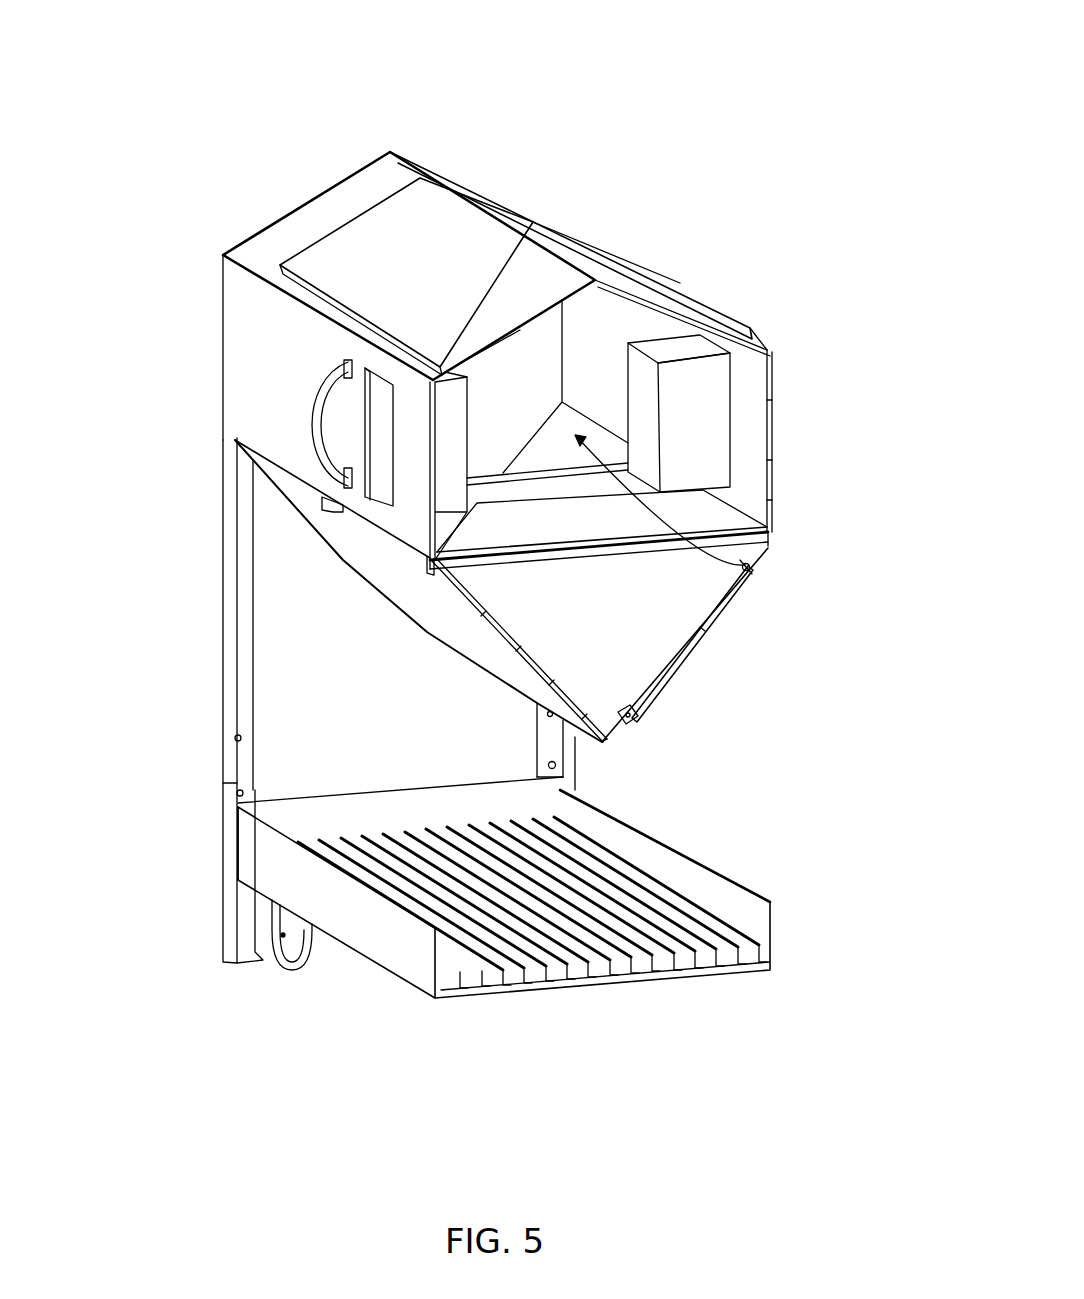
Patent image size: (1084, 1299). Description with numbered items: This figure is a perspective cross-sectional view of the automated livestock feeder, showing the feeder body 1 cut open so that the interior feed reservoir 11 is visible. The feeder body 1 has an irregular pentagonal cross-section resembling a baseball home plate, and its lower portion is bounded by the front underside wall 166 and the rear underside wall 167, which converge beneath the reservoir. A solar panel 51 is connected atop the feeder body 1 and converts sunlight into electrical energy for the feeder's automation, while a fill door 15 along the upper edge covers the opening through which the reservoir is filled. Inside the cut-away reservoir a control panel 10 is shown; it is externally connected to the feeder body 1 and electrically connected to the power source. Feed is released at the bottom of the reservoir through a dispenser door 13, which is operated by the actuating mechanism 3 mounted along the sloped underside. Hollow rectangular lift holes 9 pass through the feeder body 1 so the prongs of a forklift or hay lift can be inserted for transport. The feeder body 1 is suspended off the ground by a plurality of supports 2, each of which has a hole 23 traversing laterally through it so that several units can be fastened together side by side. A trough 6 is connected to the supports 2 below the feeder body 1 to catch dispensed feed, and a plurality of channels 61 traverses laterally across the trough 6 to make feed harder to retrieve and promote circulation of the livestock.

The feeder body 1 is at (316, 139).
The plurality of supports 2 is at (228, 647).
The actuating mechanism 3 is at (680, 672).
The trough 6 is at (806, 889).
The lift holes 9 is at (333, 515).
The control panel 10 is at (718, 425).
The feed reservoir 11 is at (748, 566).
The dispenser door 13 is at (620, 723).
The fill door 15 is at (652, 273).
The hole 23 is at (241, 740).
The solar panel 51 is at (427, 284).
The plurality of channels 61 is at (520, 990).
The front underside wall 166 is at (607, 614).
The rear underside wall 167 is at (450, 615).